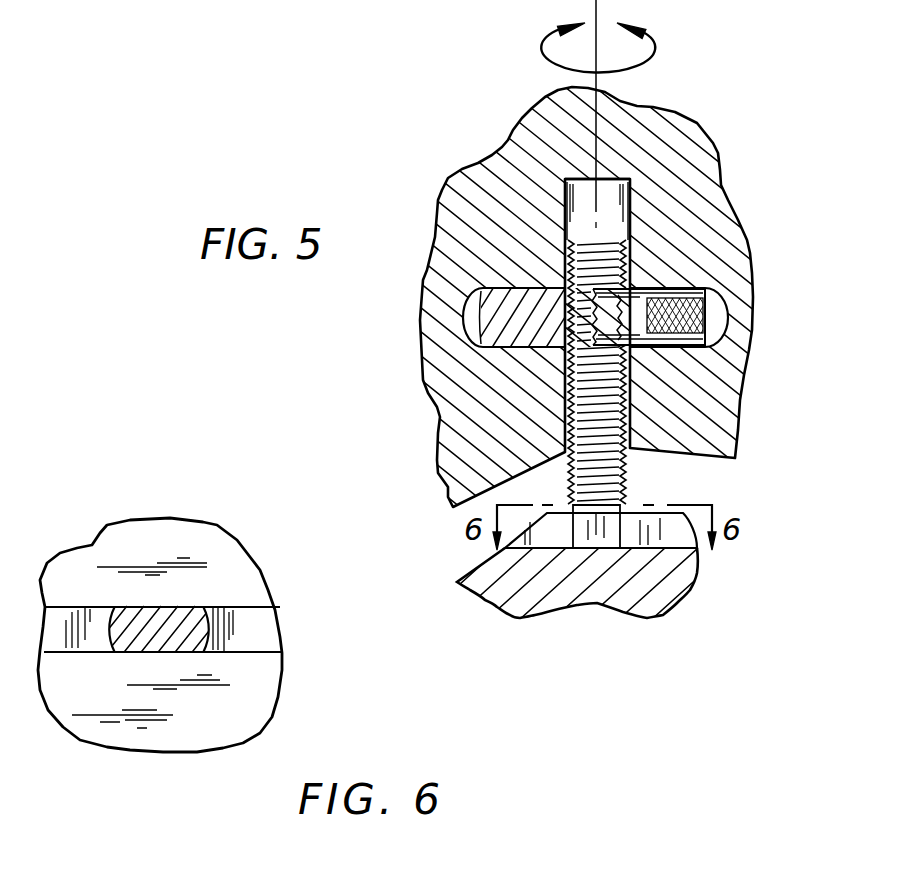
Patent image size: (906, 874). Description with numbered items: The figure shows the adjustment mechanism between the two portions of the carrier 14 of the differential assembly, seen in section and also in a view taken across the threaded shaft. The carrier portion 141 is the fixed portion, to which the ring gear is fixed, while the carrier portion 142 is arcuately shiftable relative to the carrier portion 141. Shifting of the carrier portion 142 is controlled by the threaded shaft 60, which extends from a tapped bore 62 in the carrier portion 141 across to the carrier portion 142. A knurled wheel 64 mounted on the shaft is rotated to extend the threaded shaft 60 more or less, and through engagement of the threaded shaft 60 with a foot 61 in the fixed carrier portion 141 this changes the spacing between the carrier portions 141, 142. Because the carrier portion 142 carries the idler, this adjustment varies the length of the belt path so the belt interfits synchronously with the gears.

In FIG. 5, the carrier 14 is at (512, 238).
In FIG. 5, the threaded shaft 60 is at (568, 397).
In FIG. 6, the foot 61 is at (148, 617).
In FIG. 5, the tapped bore 62 is at (613, 212).
In FIG. 5, the knurled wheel 64 is at (675, 295).
In FIG. 5, the carrier portion 141 is at (650, 606).
In FIG. 6, the carrier portion 141 is at (255, 673).
In FIG. 5, the carrier portion 142 is at (713, 383).